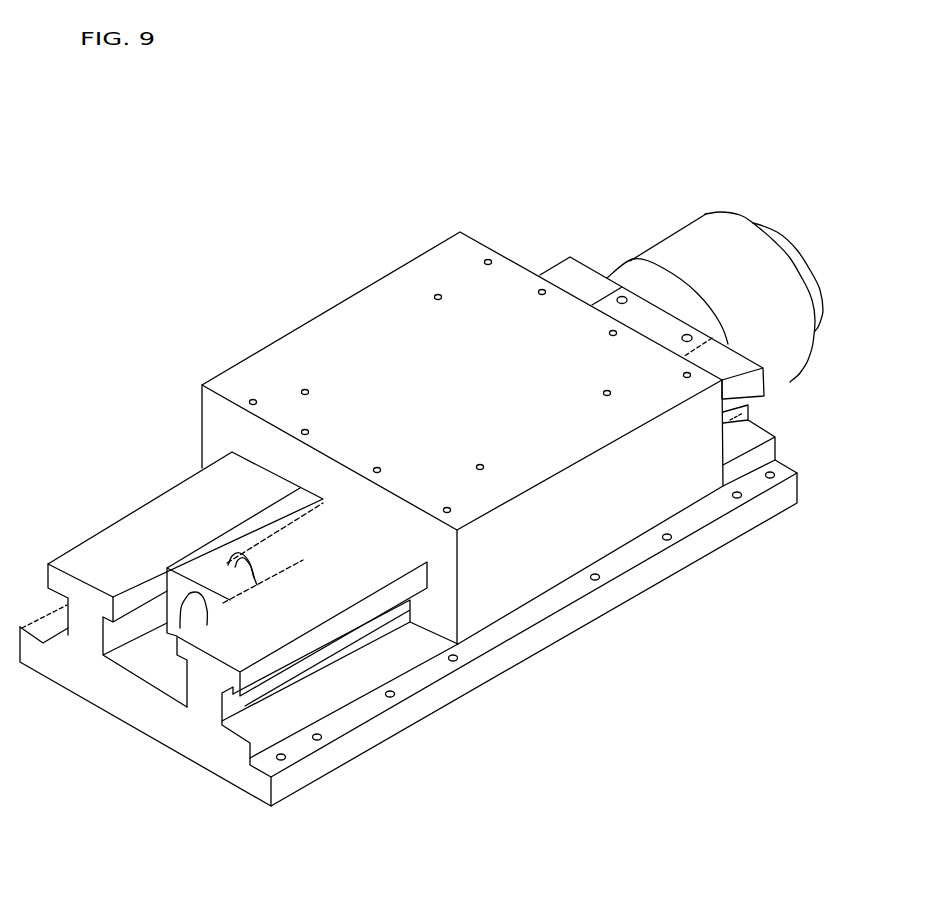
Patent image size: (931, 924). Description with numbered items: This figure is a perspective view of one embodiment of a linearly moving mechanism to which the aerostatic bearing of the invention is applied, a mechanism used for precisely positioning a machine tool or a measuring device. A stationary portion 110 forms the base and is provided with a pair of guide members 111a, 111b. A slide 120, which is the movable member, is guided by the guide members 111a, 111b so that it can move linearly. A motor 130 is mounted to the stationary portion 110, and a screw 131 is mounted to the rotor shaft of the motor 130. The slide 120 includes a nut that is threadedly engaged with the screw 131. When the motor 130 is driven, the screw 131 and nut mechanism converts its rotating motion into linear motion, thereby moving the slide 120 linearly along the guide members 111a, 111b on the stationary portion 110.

The stationary portion 110 is at (710, 543).
The guide member 111a is at (82, 623).
The guide member 111b is at (203, 697).
The slide 120 is at (338, 313).
The motor 130 is at (789, 383).
The screw 131 is at (272, 540).